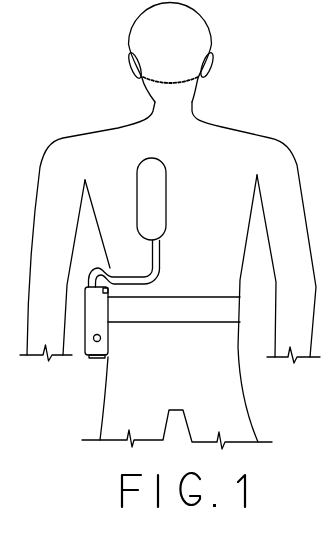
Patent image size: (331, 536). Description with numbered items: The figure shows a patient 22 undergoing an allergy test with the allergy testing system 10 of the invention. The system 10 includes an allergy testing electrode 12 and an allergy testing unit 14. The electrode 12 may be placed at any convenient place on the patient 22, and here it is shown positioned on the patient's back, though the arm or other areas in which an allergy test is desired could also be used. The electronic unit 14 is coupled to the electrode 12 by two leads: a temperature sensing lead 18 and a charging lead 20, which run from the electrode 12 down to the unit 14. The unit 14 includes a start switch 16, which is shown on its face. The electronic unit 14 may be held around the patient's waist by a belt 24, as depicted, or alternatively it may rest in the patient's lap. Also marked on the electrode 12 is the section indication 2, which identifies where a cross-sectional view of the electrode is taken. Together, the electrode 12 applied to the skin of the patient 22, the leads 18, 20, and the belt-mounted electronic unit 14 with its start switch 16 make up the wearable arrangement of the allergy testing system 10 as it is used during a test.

The section line 2- 2 is at (136, 177).
The allergy testing system 10 is at (198, 287).
The allergy testing electrode 12 is at (172, 208).
The allergy testing unit 14 is at (89, 362).
The start switch 16 is at (101, 340).
The temperature sensing lead 18 is at (160, 253).
The charging lead 20 is at (141, 272).
The patient 22 is at (220, 117).
The belt 24 is at (206, 323).